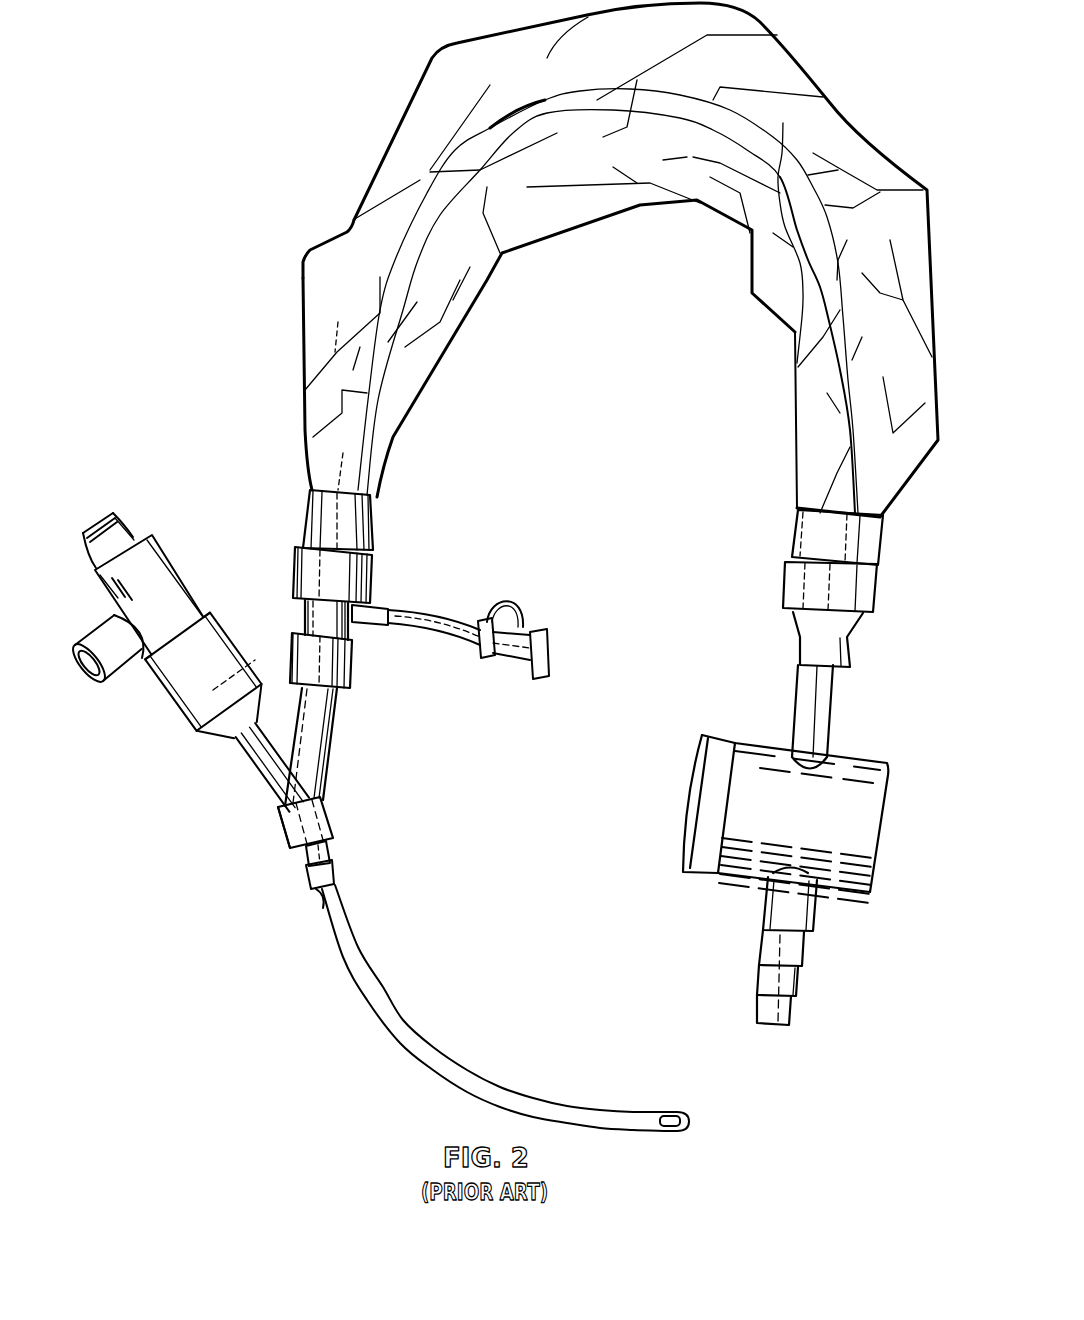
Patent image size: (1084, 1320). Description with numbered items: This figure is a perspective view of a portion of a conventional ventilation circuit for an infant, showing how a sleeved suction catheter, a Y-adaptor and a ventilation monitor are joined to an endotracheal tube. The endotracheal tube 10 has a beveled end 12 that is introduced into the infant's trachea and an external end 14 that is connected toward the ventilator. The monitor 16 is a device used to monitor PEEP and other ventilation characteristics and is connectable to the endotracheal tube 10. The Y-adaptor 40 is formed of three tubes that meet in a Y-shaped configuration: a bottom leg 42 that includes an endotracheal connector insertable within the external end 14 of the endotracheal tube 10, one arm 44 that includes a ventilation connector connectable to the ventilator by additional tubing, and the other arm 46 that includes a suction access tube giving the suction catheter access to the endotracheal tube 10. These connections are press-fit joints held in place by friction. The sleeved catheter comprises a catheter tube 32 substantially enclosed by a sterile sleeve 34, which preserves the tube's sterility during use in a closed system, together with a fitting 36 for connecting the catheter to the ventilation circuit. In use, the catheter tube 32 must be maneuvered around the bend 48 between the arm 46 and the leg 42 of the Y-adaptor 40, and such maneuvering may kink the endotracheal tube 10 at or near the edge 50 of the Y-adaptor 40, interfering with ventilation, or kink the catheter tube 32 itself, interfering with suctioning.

The endotracheal tube 10 is at (403, 1018).
The beveled end 12 is at (670, 1112).
The external end 14 is at (335, 868).
The monitor 16 is at (152, 593).
The catheter tube 32 is at (752, 135).
The sterile sleeve 34 is at (487, 283).
The fitting 36 is at (330, 620).
The Y-adaptor 40 is at (305, 825).
The bottom leg 42 is at (317, 860).
The arm 44 is at (336, 84).
The arm 46 is at (307, 737).
The bend 48 is at (285, 808).
The edge 50 is at (327, 900).